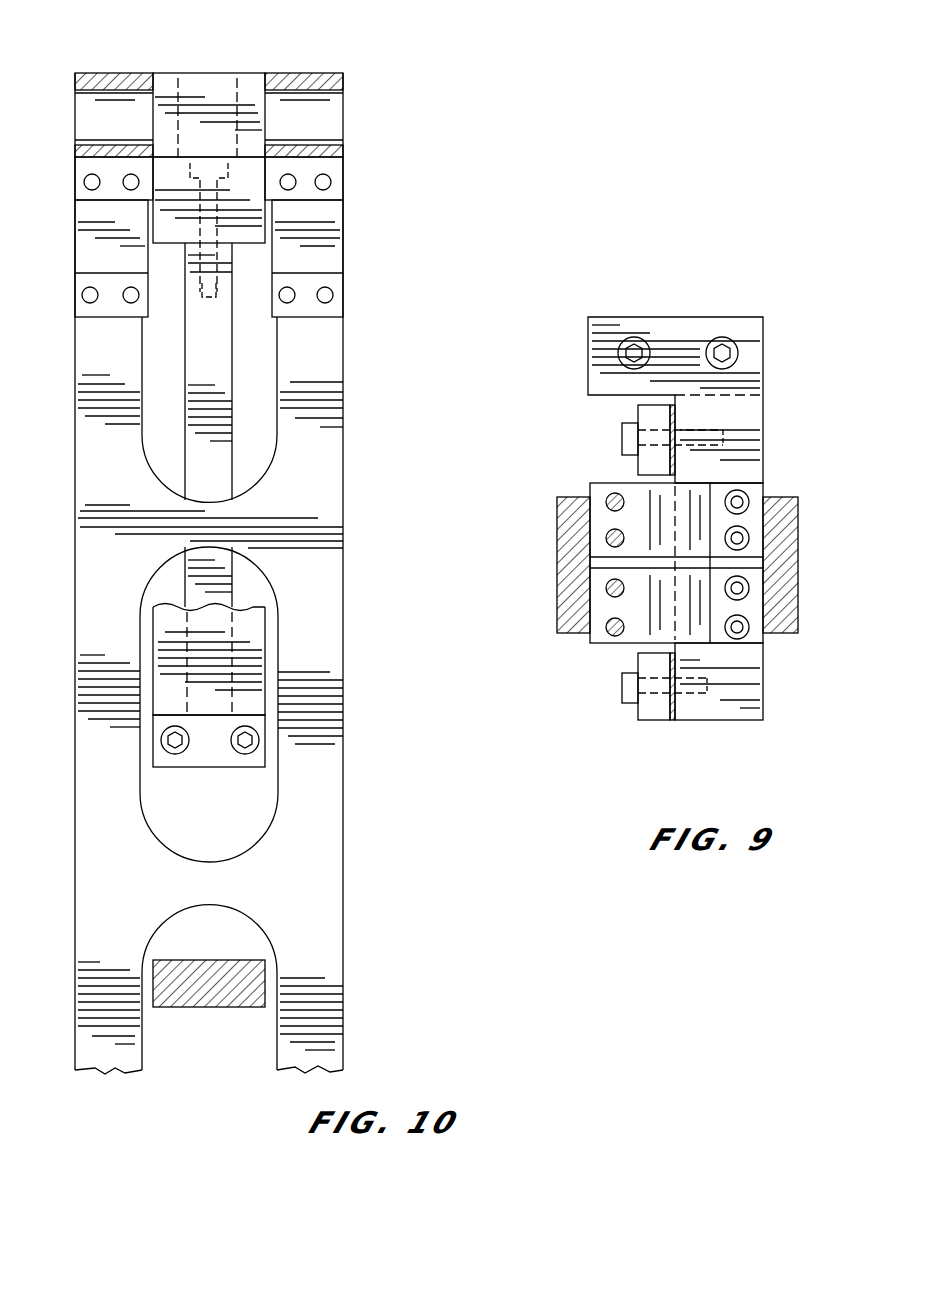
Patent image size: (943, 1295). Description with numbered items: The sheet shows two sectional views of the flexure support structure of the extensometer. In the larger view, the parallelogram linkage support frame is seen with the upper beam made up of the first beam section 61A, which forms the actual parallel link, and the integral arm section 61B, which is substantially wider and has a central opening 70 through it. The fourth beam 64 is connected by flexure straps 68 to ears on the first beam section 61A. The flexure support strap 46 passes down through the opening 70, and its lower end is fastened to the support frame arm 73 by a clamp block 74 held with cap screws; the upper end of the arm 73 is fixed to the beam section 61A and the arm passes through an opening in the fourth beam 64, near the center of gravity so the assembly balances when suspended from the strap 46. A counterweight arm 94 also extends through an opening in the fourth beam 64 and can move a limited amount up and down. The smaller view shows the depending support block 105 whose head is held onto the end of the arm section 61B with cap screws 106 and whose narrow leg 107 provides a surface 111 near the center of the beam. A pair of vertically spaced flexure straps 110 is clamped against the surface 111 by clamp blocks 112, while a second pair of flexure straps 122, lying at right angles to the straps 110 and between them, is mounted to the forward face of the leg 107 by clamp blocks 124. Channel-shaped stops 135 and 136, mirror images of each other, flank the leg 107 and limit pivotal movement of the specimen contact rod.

In FIG. 10, the flexure support strap 46 is at (250, 665).
In FIG. 10, the first beam section 61A is at (248, 228).
In FIG. 10, the arm section 61B is at (118, 73).
In FIG. 10, the fourth beam 64 is at (310, 885).
In FIG. 10, the flexure straps 68 is at (90, 236).
In FIG. 10, the central opening 70 is at (205, 78).
In FIG. 10, the support frame arm 73 is at (220, 400).
In FIG. 10, the clamp block 74 is at (222, 750).
In FIG. 10, the counterweight arm 94 is at (225, 1007).
In FIG. 9, the support block 105 is at (685, 330).
In FIG. 9, the cap screws 106 is at (633, 340).
In FIG. 9, the leg 107 is at (745, 432).
In FIG. 9, the flexure straps 110 is at (675, 420).
In FIG. 9, the surface 111 is at (675, 560).
In FIG. 9, the clamp blocks 112 is at (636, 428).
In FIG. 9, the flexure straps 122 is at (693, 493).
In FIG. 9, the clamp blocks 124 is at (757, 520).
In FIG. 9, the stop 135 is at (785, 590).
In FIG. 9, the stop 136 is at (568, 535).